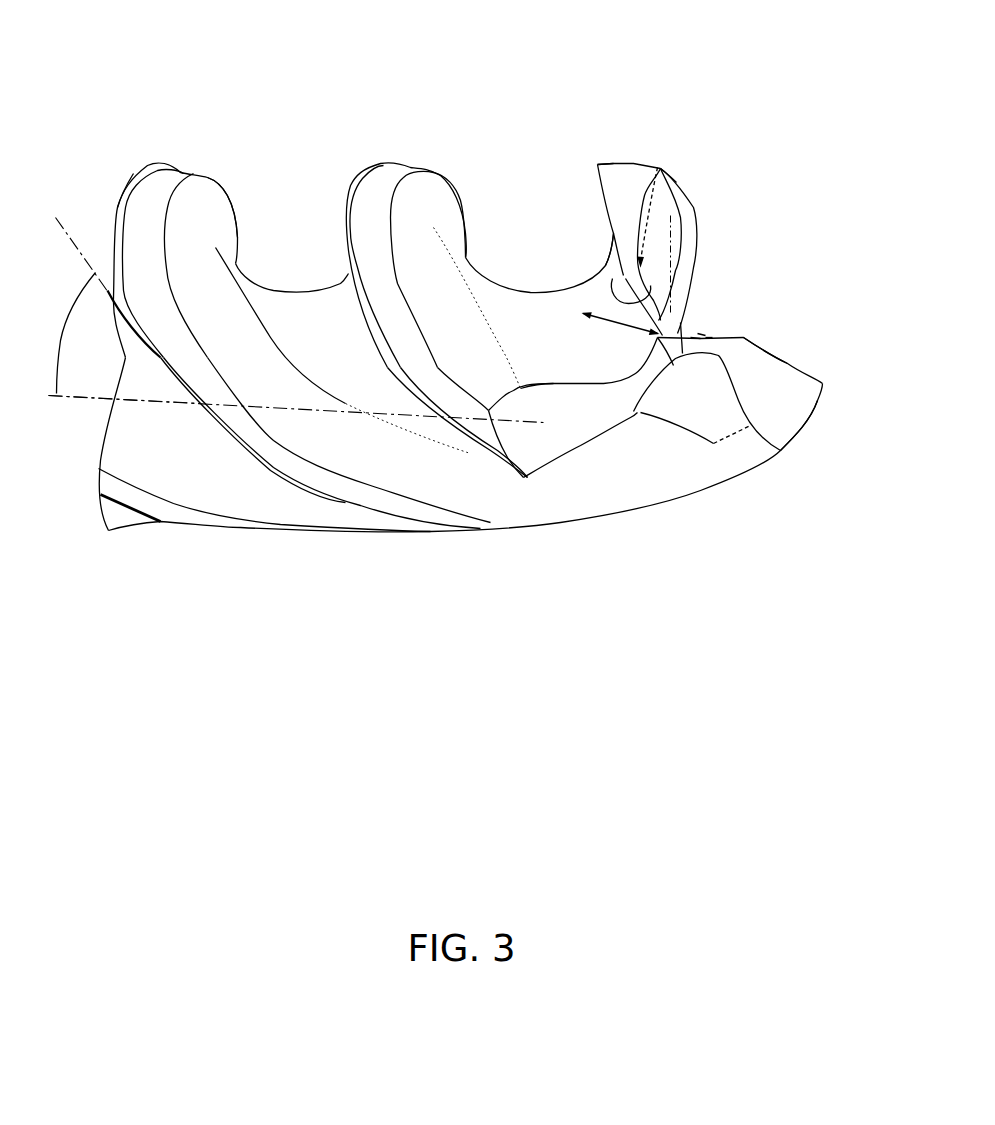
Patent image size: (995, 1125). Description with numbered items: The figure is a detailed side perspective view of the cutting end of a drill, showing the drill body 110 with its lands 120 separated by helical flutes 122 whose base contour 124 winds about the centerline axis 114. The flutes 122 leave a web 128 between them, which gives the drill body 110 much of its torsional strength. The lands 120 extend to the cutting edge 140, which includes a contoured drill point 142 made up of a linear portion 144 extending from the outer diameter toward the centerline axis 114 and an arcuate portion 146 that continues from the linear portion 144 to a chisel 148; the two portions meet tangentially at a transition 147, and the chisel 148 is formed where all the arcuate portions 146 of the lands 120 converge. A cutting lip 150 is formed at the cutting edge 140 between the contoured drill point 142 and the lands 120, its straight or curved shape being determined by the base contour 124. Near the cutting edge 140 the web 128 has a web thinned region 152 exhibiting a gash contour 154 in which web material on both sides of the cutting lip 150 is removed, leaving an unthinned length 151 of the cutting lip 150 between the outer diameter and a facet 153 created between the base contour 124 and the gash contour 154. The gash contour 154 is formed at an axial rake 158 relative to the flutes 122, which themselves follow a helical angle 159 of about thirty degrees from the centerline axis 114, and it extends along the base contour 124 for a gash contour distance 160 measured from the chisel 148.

The drill body 110 is at (129, 132).
The centerline axis 114 is at (90, 398).
The lands 120 is at (607, 161).
The flutes 122 is at (375, 158).
The base contour 124 is at (725, 463).
The web 128 is at (306, 285).
The cutting edge 140 is at (643, 158).
The contoured drill point 142 is at (663, 167).
The linear portion 144 is at (617, 193).
The arcuate portion 146 is at (700, 333).
The transition 147 is at (707, 337).
The chisel 148 is at (697, 330).
The cutting lip 150 is at (785, 358).
The unthinned length 151 is at (528, 485).
The web thinned region 152 is at (575, 333).
The facet 153 is at (697, 433).
The gash contour 154 is at (678, 410).
The axial rake 158 is at (610, 320).
The helical angle 159 is at (63, 333).
The gash contour distance 160 is at (630, 327).